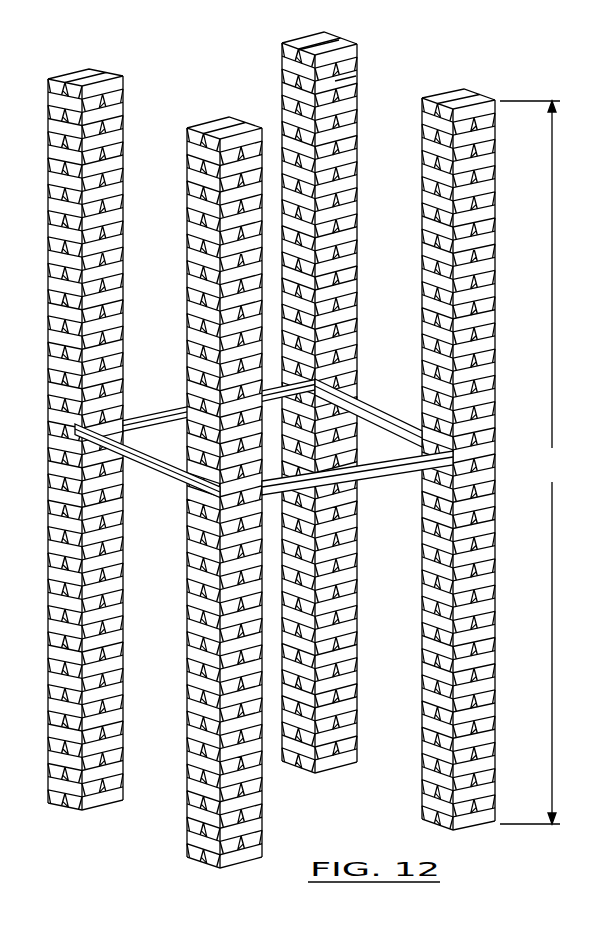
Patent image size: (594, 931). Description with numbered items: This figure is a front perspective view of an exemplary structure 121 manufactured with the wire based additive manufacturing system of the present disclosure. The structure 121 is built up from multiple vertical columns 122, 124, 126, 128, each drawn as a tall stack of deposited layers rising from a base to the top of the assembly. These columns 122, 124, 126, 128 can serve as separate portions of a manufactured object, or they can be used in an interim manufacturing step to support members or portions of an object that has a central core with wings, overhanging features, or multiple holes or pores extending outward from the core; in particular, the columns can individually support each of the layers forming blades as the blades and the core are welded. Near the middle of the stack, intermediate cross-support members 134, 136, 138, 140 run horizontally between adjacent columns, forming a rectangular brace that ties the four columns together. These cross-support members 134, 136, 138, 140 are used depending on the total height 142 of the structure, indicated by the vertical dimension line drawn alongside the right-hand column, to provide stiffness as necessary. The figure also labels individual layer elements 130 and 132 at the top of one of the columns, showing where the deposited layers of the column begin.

The structure 121 is at (303, 450).
The vertical column 122 is at (487, 101).
The vertical column 124 is at (212, 130).
The vertical column 126 is at (352, 82).
The vertical column 128 is at (113, 84).
The ingot column 130 is at (291, 40).
The ingot 132 is at (345, 47).
The intermediate cross-support member 134 is at (381, 403).
The intermediate cross-support member 136 is at (372, 484).
The intermediate cross-support member 138 is at (166, 470).
The intermediate cross-support member 140 is at (164, 418).
The total height 142 is at (537, 462).